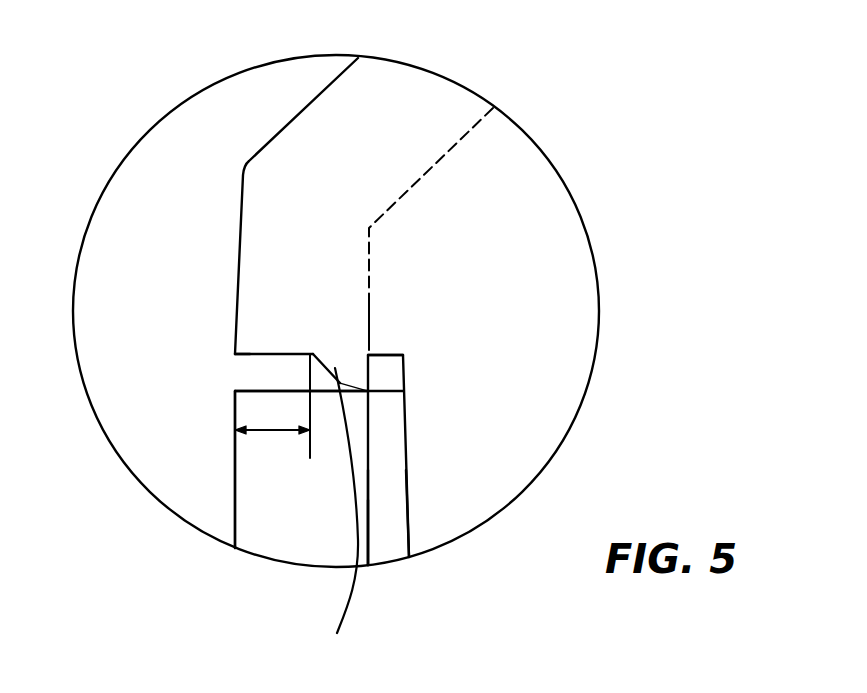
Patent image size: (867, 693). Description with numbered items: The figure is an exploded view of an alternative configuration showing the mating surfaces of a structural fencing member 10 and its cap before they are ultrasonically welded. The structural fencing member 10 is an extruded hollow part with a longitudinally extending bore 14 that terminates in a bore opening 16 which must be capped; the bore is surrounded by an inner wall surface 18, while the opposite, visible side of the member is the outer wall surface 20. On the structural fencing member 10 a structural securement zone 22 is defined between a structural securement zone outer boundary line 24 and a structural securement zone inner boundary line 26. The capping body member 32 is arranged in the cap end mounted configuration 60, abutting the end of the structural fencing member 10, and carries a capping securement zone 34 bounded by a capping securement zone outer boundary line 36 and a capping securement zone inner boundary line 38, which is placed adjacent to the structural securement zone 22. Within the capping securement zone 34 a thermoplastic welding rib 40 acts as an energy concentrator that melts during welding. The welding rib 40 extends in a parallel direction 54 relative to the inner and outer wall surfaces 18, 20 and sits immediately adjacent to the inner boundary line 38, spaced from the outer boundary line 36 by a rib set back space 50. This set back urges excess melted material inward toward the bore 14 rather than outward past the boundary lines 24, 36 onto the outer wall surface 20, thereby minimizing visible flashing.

The structural fencing member 10 is at (323, 525).
The longitudinally extending bore 14 is at (388, 537).
The bore opening 16 is at (387, 395).
The inner wall surface 18 is at (370, 507).
The outer wall surface 20 is at (235, 485).
The structural securement zone 22 is at (353, 390).
The structural securement zone outer boundary line 24 is at (233, 392).
The structural securement zone inner boundary line 26 is at (370, 390).
The capping body member 32 is at (249, 159).
The capping securement zone 34 is at (280, 353).
The capping securement zone outer boundary line 36 is at (236, 354).
The capping securement zone inner boundary line 38 is at (340, 383).
The welding rib 40 is at (335, 358).
The rib set back space 50 is at (271, 433).
The parallel direction 54 is at (330, 510).
The cap end mounted configuration 60 is at (412, 93).